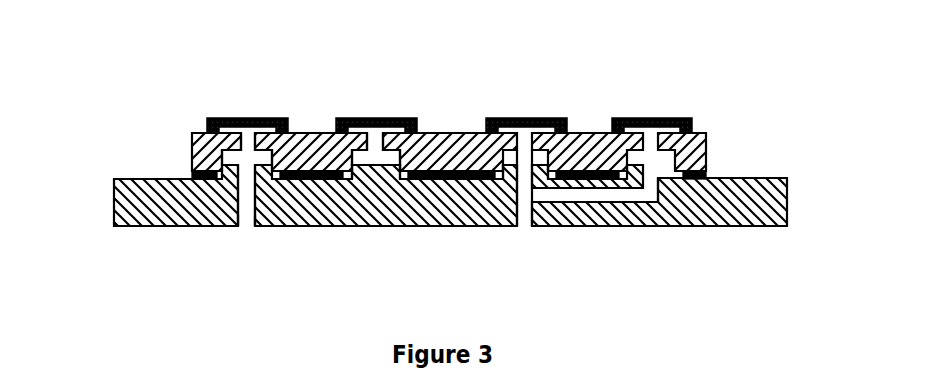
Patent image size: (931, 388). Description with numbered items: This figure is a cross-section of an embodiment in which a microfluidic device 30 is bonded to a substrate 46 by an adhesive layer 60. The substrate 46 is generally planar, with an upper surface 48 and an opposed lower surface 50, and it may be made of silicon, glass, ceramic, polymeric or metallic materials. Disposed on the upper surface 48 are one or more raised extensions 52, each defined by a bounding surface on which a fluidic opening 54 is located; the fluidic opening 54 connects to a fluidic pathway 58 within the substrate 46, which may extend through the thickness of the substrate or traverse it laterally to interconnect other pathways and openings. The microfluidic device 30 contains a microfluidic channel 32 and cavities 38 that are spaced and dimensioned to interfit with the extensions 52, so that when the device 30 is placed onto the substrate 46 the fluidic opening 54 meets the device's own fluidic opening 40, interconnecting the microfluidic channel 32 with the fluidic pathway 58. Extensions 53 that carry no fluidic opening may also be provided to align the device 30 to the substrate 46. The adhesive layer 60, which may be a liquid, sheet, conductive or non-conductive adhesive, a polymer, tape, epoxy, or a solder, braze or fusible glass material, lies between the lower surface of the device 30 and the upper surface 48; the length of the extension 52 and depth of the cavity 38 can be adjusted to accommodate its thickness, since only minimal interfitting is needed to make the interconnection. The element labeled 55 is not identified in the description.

The microfluidic device 30 is at (191, 153).
The microfluidic channel 32 is at (502, 120).
The cavity 38 is at (365, 152).
The fluidic opening 40 is at (243, 147).
The substrate 46 is at (665, 212).
The upper surface 48 is at (757, 166).
The lower surface 50 is at (768, 238).
The raised extension 52 is at (510, 172).
The extension 53 is at (363, 172).
The fluidic opening 54 is at (247, 170).
The opening 55 is at (245, 225).
The fluidic pathway 58 is at (527, 192).
The adhesive layer 60 is at (192, 177).